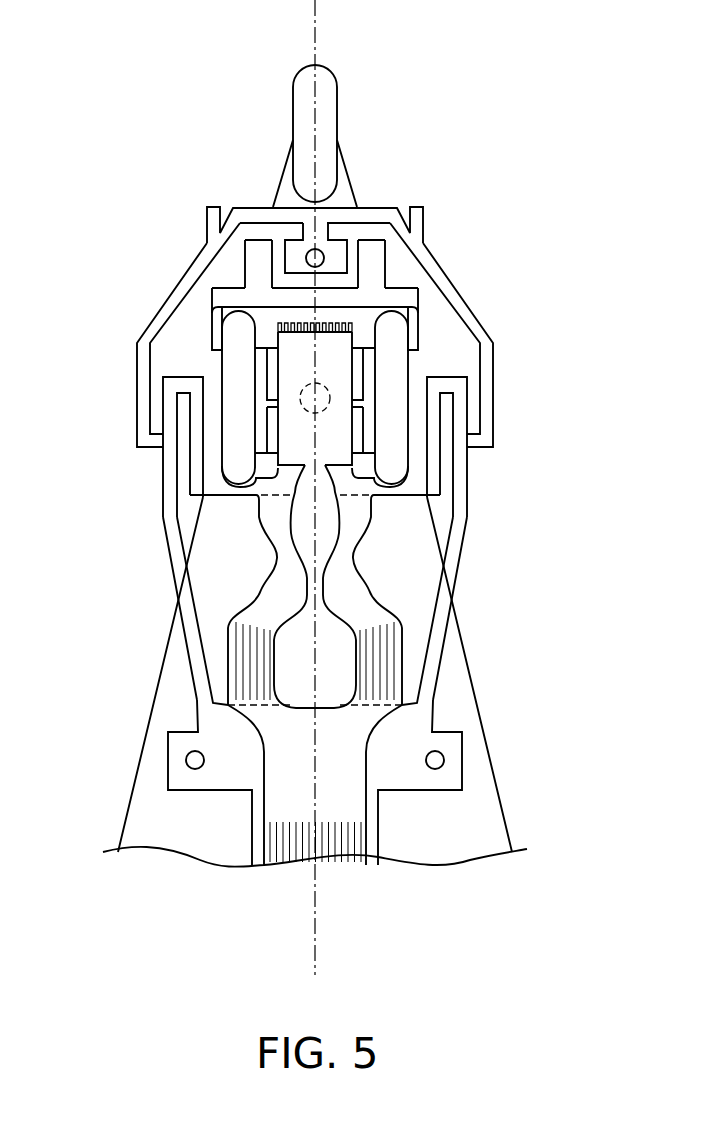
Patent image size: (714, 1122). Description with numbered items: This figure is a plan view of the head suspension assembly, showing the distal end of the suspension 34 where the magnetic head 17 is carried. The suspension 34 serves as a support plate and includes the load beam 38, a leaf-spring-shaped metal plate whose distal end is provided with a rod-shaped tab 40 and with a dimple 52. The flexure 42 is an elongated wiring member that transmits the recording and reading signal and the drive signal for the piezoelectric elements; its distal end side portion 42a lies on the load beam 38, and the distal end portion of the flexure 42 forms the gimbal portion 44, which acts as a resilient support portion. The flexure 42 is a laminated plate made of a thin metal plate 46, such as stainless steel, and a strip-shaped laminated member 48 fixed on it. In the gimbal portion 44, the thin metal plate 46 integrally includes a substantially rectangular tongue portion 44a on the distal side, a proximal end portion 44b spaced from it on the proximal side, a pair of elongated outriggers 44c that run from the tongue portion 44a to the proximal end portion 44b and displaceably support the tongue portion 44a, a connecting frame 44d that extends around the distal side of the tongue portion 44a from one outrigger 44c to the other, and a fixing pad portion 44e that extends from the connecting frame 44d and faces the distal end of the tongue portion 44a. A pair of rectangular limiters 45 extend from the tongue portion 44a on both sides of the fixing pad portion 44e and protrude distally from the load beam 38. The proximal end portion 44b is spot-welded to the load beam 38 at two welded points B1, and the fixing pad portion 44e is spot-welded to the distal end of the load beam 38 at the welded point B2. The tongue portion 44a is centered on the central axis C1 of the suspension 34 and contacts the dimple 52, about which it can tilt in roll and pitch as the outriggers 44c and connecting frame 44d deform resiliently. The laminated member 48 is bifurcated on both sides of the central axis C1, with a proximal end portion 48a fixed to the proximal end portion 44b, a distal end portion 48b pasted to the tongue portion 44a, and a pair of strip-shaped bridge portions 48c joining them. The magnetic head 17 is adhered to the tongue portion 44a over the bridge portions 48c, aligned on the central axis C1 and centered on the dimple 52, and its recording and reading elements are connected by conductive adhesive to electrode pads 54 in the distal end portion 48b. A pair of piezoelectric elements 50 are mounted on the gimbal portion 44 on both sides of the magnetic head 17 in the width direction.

The central axis C1 is at (323, 18).
The tab 40 is at (331, 88).
The gimbal portion 44 is at (78, 205).
The tongue portion 44a is at (358, 382).
The proximal end portion 44b is at (402, 730).
The outriggers 44c is at (177, 548).
The connecting frame 44d is at (187, 285).
The fixing pad portion 44e is at (298, 250).
The limiters 45 is at (258, 262).
The laminated member 48 is at (380, 668).
The proximal end portion 48a is at (285, 753).
The distal end portion 48b is at (373, 310).
The bridge portions 48c is at (278, 545).
The piezoelectric elements 50 is at (233, 363).
The dimple 52 is at (302, 405).
The electrode pads 54 is at (298, 318).
The magnetic head 17 is at (333, 436).
The suspension 34 is at (472, 646).
The load beam 38 is at (143, 815).
The flexure 42 is at (344, 852).
The distal end side portion 42a is at (176, 707).
The thin metal plate 46 is at (408, 777).
The welded points B1 is at (185, 760).
The welded point B2 is at (324, 254).